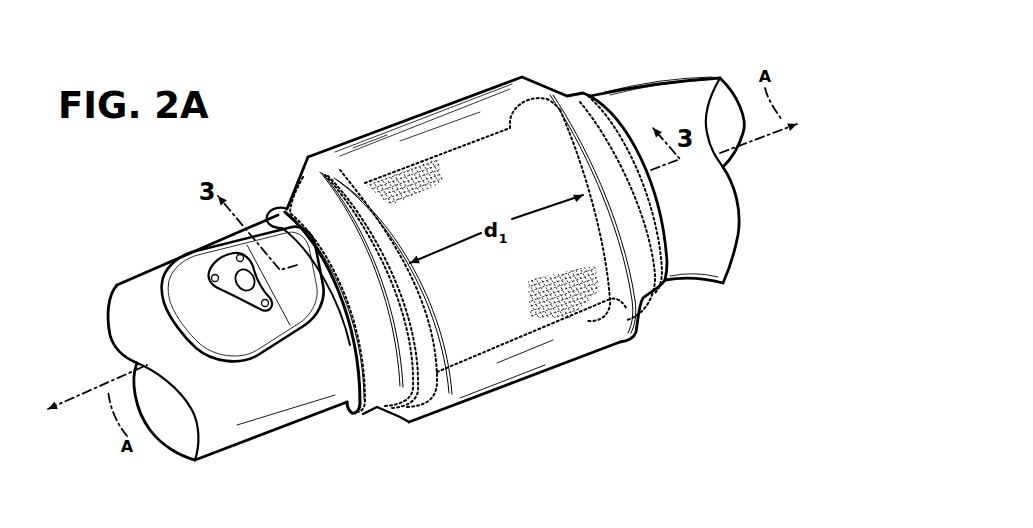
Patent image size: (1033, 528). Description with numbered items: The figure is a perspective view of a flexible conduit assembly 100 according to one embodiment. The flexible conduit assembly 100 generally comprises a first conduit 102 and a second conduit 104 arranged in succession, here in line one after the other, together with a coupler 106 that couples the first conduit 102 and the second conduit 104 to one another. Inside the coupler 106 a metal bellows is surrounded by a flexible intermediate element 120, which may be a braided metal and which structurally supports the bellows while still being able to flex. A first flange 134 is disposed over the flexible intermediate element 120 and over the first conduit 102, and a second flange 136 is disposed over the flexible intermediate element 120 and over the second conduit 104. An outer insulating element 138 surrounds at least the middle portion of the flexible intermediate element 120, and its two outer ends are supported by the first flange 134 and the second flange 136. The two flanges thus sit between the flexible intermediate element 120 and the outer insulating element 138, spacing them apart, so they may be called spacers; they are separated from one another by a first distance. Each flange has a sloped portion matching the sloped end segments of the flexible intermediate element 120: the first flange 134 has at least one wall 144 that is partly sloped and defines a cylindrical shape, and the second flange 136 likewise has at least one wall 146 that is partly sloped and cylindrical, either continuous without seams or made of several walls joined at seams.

The flexible conduit assembly 100 is at (557, 51).
The first conduit 102 is at (708, 260).
The second conduit 104 is at (227, 420).
The coupler 106 is at (448, 412).
The flexible intermediate element 120 is at (573, 318).
The first flange 134 is at (540, 103).
The second flange 136 is at (350, 177).
The outer insulating element 138 is at (396, 143).
The wall 144 is at (520, 113).
The wall 146 is at (422, 325).